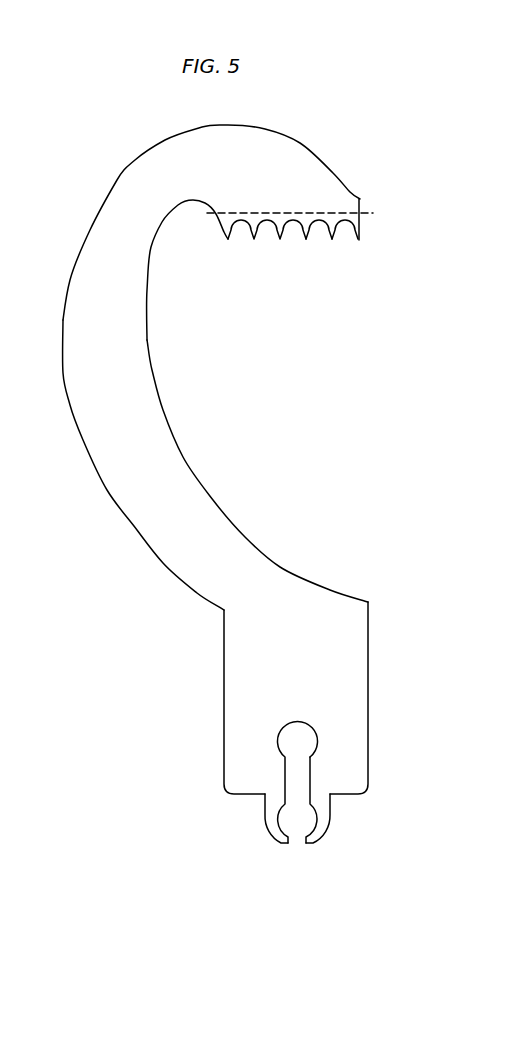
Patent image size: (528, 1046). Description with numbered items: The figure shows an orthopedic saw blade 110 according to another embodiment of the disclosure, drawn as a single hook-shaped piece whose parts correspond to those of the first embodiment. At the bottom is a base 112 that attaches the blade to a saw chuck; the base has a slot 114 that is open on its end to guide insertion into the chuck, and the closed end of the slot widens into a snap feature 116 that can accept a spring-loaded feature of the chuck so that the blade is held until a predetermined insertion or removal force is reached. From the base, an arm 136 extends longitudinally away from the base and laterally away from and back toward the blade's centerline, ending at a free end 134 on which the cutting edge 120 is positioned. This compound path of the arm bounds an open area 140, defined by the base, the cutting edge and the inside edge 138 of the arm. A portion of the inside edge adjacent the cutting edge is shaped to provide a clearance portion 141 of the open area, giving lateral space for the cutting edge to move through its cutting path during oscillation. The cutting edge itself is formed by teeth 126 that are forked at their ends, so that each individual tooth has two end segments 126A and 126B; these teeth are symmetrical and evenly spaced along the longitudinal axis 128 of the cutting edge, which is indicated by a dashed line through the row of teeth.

The hook 110 is at (136, 121).
The stem 112 is at (363, 637).
The slot opening 114 is at (295, 844).
The apertures 116 is at (303, 732).
The tip portion 120 is at (379, 227).
The teeth 126 is at (334, 244).
The end segment 126A is at (331, 240).
The end segment 126B is at (344, 238).
The longitudinal axis 128 is at (336, 212).
The outer arcuate surface 134 is at (303, 158).
The lower outer surface 136 is at (112, 485).
The inner surface 138 is at (213, 500).
The throat 140 is at (278, 411).
The inner hook surface 141 is at (197, 232).